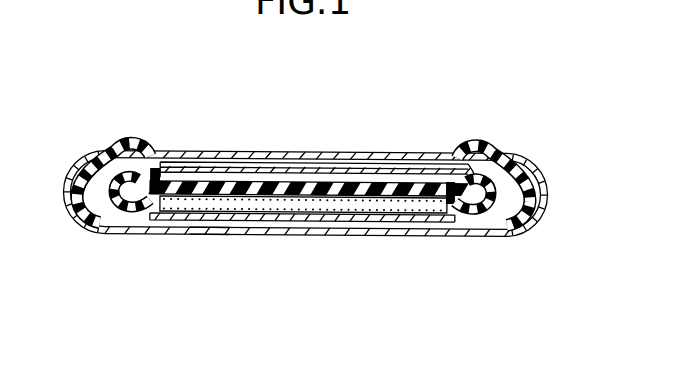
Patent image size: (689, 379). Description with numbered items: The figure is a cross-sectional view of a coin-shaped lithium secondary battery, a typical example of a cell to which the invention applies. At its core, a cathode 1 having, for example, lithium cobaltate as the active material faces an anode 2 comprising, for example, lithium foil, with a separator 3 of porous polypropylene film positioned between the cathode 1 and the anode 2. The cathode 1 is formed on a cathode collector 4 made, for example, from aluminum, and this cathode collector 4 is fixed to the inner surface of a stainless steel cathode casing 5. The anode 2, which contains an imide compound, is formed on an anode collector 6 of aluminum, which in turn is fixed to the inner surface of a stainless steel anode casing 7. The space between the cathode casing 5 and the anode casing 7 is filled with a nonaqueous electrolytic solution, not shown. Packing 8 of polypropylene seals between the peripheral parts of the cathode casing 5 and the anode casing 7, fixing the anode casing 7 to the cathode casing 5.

The cathode 1 is at (350, 222).
The anode 2 is at (356, 160).
The separator 3 is at (274, 219).
The cathode collector 4 is at (207, 229).
The cathode casing 5 is at (417, 235).
The anode collector 6 is at (407, 152).
The anode casing 7 is at (288, 151).
The packing 8 is at (128, 141).